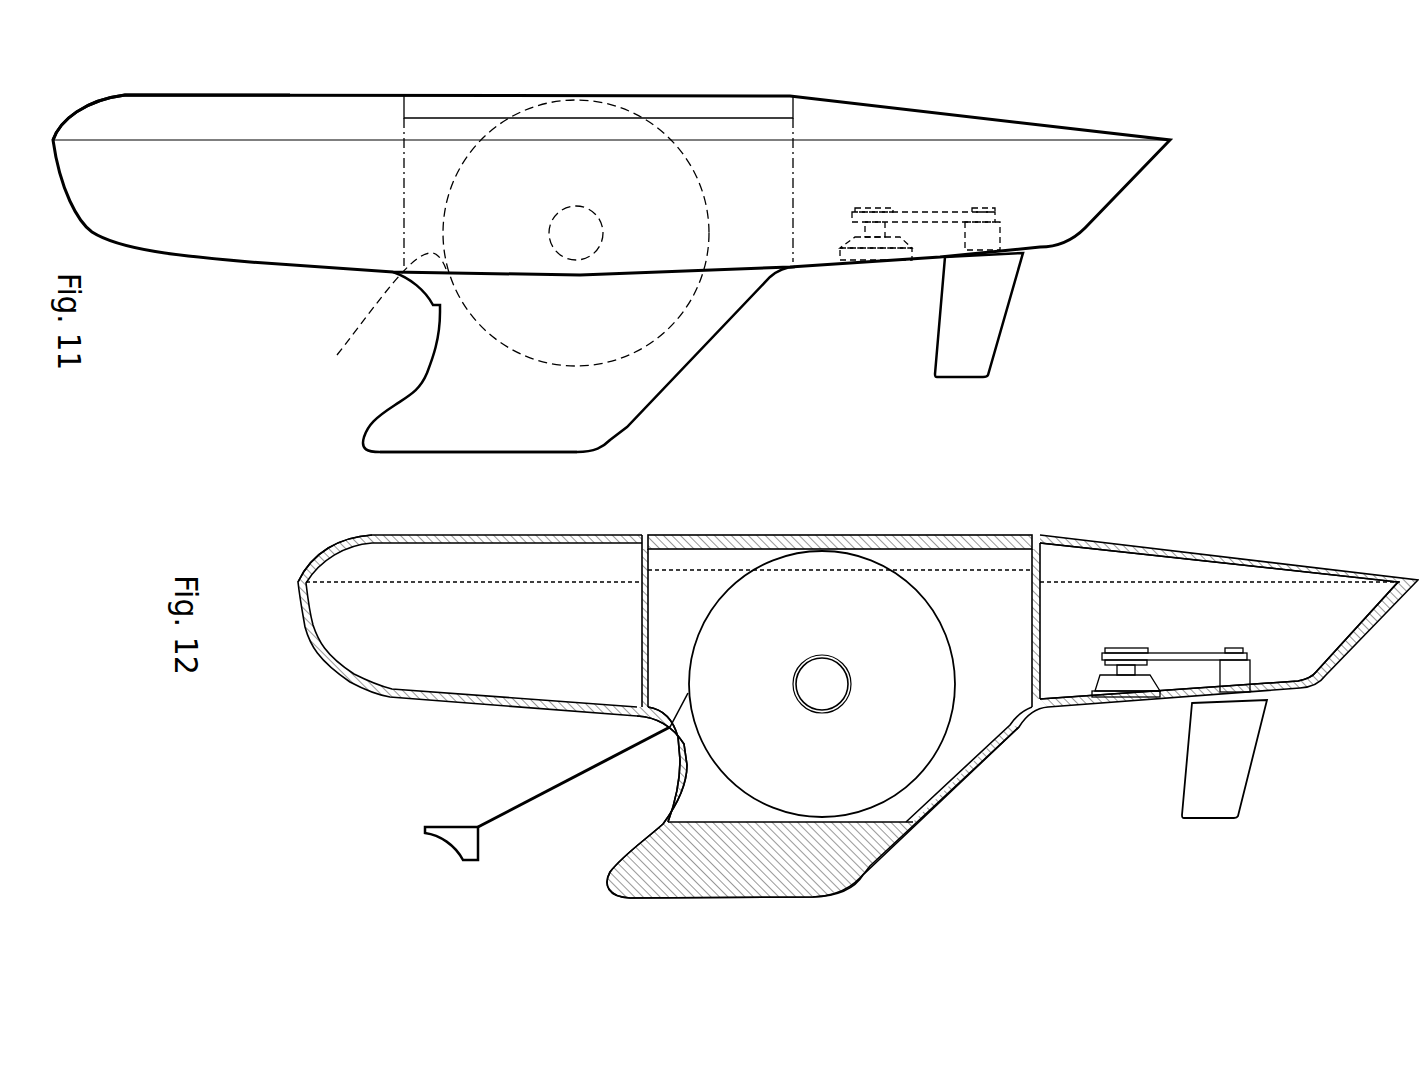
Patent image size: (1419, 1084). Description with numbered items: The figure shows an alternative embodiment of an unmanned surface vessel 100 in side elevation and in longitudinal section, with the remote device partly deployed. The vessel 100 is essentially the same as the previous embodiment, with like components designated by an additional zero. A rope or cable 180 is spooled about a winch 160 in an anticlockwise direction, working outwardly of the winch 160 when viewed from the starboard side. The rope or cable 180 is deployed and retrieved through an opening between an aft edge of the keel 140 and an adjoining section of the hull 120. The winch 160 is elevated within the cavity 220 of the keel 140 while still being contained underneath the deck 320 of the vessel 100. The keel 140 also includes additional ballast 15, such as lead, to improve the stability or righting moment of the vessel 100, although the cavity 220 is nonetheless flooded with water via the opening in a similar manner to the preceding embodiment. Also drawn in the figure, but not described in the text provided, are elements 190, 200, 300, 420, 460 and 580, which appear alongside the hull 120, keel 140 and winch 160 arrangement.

In FIG. 11, the unmanned surface vessel 100 is at (846, 82).
In FIG. 12, the unmanned surface vessel 100 is at (980, 499).
In FIG. 11, the hull 120 is at (932, 243).
In FIG. 12, the hull 120 is at (1120, 707).
In FIG. 11, the keel 140 is at (682, 377).
In FIG. 12, the keel 140 is at (664, 797).
In FIG. 11, the winch 160 is at (673, 131).
In FIG. 12, the winch 160 is at (880, 563).
In FIG. 11, the rope or cable 180 is at (372, 318).
In FIG. 12, the rope or cable 180 is at (512, 803).
In FIG. 11, the rudder 190 is at (980, 323).
In FIG. 12, the rudder 190 is at (1220, 773).
In FIG. 11, the propeller 200 is at (420, 287).
In FIG. 12, the propeller 200 is at (465, 840).
In FIG. 12, the cavity 220 is at (703, 803).
In FIG. 12, the stern compartment 300 is at (1052, 632).
In FIG. 11, the deck 320 is at (287, 93).
In FIG. 12, the deck 320 is at (463, 533).
In FIG. 11, the keel bottom 420 is at (532, 462).
In FIG. 12, the flywheel axle 460 is at (827, 688).
In FIG. 12, the deck plate 580 is at (830, 538).
In FIG. 12, the ballast 15 is at (837, 867).